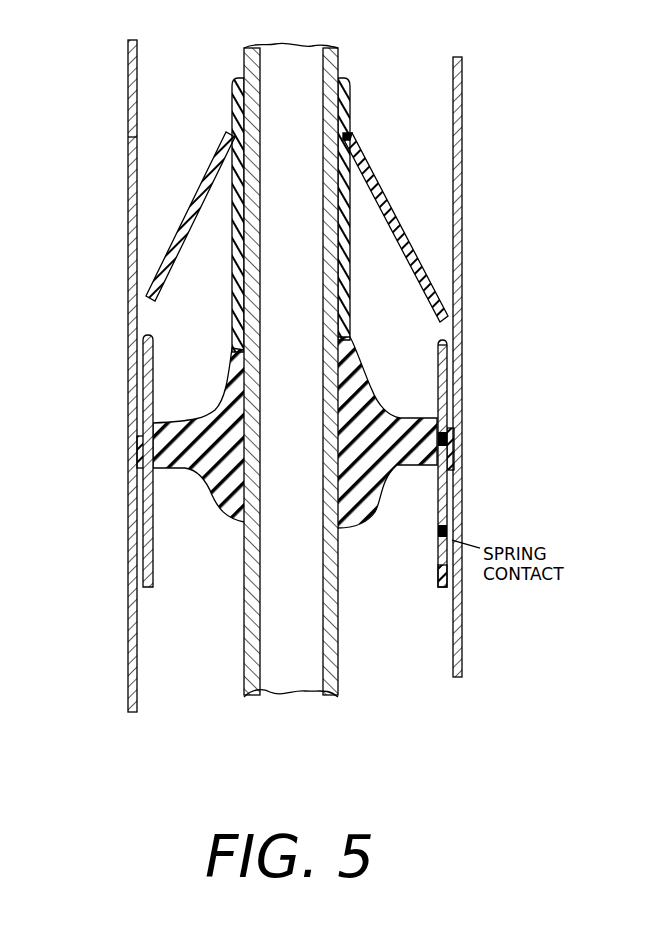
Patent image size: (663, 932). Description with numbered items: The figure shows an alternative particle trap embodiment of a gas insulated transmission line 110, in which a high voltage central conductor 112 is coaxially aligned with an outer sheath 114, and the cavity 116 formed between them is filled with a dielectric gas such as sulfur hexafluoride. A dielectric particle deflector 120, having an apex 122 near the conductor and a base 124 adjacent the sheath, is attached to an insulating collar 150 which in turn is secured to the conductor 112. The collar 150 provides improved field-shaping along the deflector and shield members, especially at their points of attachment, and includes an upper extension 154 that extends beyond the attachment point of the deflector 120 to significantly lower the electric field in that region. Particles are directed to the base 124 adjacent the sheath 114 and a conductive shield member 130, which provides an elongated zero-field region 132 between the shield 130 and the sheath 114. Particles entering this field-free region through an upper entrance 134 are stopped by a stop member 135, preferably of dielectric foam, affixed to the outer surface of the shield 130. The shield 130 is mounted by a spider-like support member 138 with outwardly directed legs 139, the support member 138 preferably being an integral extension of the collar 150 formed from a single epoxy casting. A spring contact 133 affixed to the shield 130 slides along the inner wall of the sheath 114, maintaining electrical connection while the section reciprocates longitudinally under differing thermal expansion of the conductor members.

The gas insulated transmission line 110 is at (120, 50).
The high voltage central conductor 112 is at (306, 98).
The outer sheath 114 is at (462, 62).
The cavity 116 is at (175, 137).
The dielectric particle deflector 120 is at (392, 190).
The apex 122 is at (360, 133).
The base 124 is at (433, 287).
The conductive shield member 130 is at (440, 574).
The zero-field region 132 is at (448, 395).
The spring contact 133 is at (452, 530).
The upper entrance 134 is at (450, 356).
The stop member 135 is at (450, 440).
The spider-like support member 138 is at (420, 466).
The outwardly directed legs 139 is at (172, 420).
The insulating collar 150 is at (357, 380).
The upper extension 154 is at (349, 92).